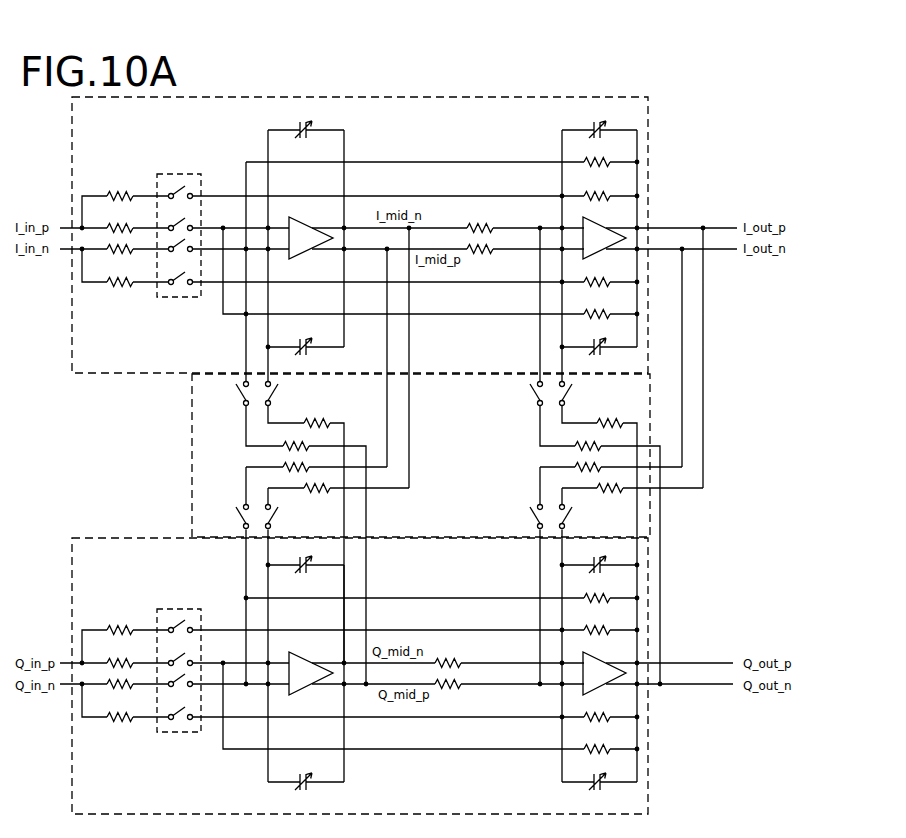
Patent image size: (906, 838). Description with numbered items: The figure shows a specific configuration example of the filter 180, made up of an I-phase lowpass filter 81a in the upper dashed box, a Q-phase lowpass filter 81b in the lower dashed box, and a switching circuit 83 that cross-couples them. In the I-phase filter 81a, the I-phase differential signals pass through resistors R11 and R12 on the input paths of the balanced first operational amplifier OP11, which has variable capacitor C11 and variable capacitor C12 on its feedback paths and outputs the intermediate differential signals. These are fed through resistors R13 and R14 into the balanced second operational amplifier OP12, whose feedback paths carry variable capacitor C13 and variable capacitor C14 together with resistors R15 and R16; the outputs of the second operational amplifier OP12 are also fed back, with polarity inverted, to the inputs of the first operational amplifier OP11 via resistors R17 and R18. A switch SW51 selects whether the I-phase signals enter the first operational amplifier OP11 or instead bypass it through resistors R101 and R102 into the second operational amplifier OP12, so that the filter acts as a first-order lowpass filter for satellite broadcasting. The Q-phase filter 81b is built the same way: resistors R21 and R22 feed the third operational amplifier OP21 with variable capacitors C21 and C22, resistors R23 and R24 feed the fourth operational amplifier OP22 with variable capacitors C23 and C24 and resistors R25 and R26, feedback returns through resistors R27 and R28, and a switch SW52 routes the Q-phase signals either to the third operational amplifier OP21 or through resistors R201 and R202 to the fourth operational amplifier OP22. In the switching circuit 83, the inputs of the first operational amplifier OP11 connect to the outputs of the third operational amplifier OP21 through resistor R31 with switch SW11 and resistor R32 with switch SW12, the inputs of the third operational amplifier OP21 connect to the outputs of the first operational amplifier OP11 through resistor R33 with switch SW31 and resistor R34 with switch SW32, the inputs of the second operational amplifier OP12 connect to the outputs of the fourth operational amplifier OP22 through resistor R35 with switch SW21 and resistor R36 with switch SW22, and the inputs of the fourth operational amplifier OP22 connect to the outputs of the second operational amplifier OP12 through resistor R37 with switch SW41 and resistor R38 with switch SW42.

The filter 180 is at (614, 53).
The filter 81a is at (637, 97).
The Q-channel filter section 81b is at (640, 815).
The switching circuit 83 is at (190, 425).
The resistor R101 is at (119, 188).
The resistor R11 is at (120, 221).
The resistor R12 is at (120, 259).
The resistor R102 is at (119, 292).
The switch SW51 is at (196, 172).
The variable capacitor C11 is at (305, 122).
The variable capacitor C12 is at (305, 354).
The first operational amplifier OP11 is at (311, 235).
The resistor R13 is at (480, 220).
The resistor R14 is at (480, 258).
The variable capacitor C14 is at (600, 122).
The resistor R17 is at (598, 156).
The resistor R15 is at (598, 189).
The second operational amplifier OP12 is at (606, 234).
The resistor R16 is at (598, 275).
The resistor R18 is at (598, 308).
The variable capacitor C13 is at (600, 339).
The switch SW11 is at (225, 394).
The switch SW12 is at (289, 394).
The switch SW21 is at (520, 394).
The switch SW22 is at (583, 394).
The switch SW31 is at (225, 518).
The switch SW32 is at (290, 518).
The switch SW41 is at (520, 518).
The switch SW42 is at (585, 518).
The resistor R31 is at (296, 439).
The resistor R32 is at (317, 416).
The resistor R33 is at (296, 476).
The resistor R34 is at (317, 498).
The resistor R35 is at (588, 439).
The resistor R36 is at (610, 416).
The resistor R37 is at (587, 476).
The resistor R38 is at (610, 498).
The resistor R201 is at (119, 623).
The resistor R21 is at (120, 655).
The resistor R22 is at (120, 694).
The resistor R202 is at (119, 726).
The switch SW52 is at (196, 607).
The variable capacitor C21 is at (305, 556).
The variable capacitor C22 is at (304, 791).
The third operational amplifier OP21 is at (311, 668).
The resistor R23 is at (447, 656).
The resistor R24 is at (447, 693).
The variable capacitor C23 is at (600, 557).
The resistor R27 is at (598, 592).
The resistor R25 is at (598, 623).
The fourth operational amplifier OP22 is at (606, 669).
The resistor R26 is at (597, 709).
The resistor R28 is at (597, 743).
The variable capacitor C24 is at (600, 774).